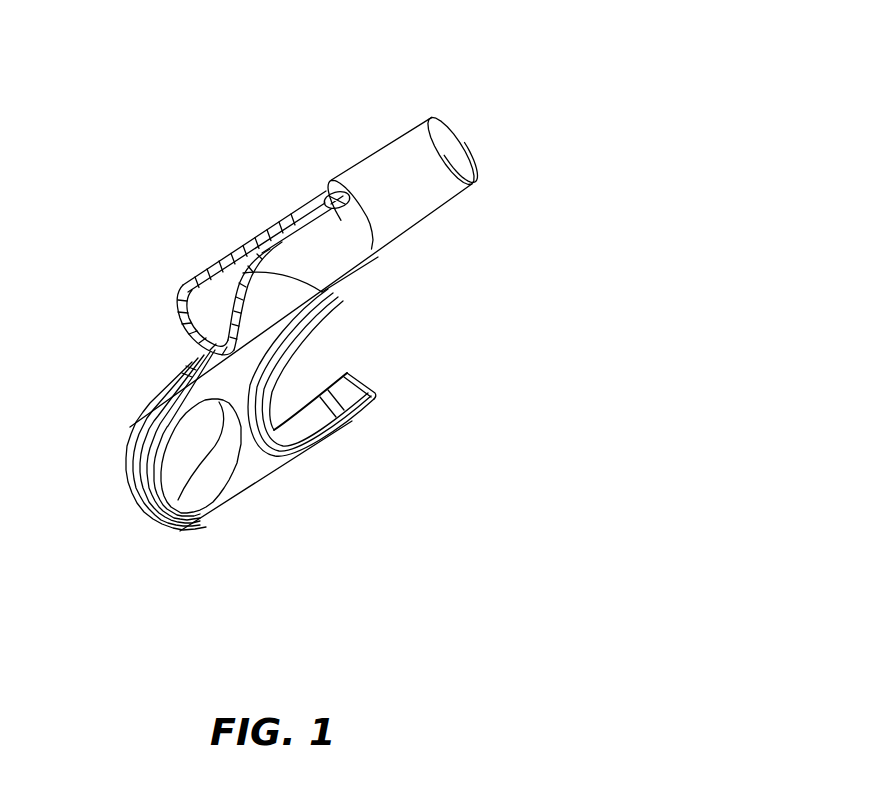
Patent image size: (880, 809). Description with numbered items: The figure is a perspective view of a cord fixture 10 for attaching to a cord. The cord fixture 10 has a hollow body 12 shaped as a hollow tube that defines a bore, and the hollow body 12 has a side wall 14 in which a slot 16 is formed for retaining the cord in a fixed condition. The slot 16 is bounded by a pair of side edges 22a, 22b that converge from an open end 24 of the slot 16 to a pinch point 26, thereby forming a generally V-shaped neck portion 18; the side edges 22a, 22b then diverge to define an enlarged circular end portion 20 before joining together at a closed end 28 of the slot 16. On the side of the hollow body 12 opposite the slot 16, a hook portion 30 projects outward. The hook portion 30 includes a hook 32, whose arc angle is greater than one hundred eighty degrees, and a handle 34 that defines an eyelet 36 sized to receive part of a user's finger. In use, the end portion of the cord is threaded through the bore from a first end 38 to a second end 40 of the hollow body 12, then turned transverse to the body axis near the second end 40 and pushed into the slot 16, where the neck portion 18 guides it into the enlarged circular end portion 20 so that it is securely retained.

The cord fixture 10 is at (147, 96).
The hollow body 12 is at (394, 104).
The side wall 14 is at (437, 180).
The slot 16 is at (160, 266).
The neck portion 18 is at (262, 246).
The enlarged circular end portion 20 is at (330, 195).
The side edge 22a is at (218, 268).
The side edge 22b is at (322, 292).
The open end 24 is at (200, 310).
The pinch point 26 is at (367, 257).
The closed end 28 is at (337, 192).
The hook portion 30 is at (262, 528).
The hook 32 is at (333, 423).
The handle 34 is at (170, 494).
The eyelet 36 is at (178, 473).
The first end 38 is at (465, 142).
The second end 40 is at (188, 328).